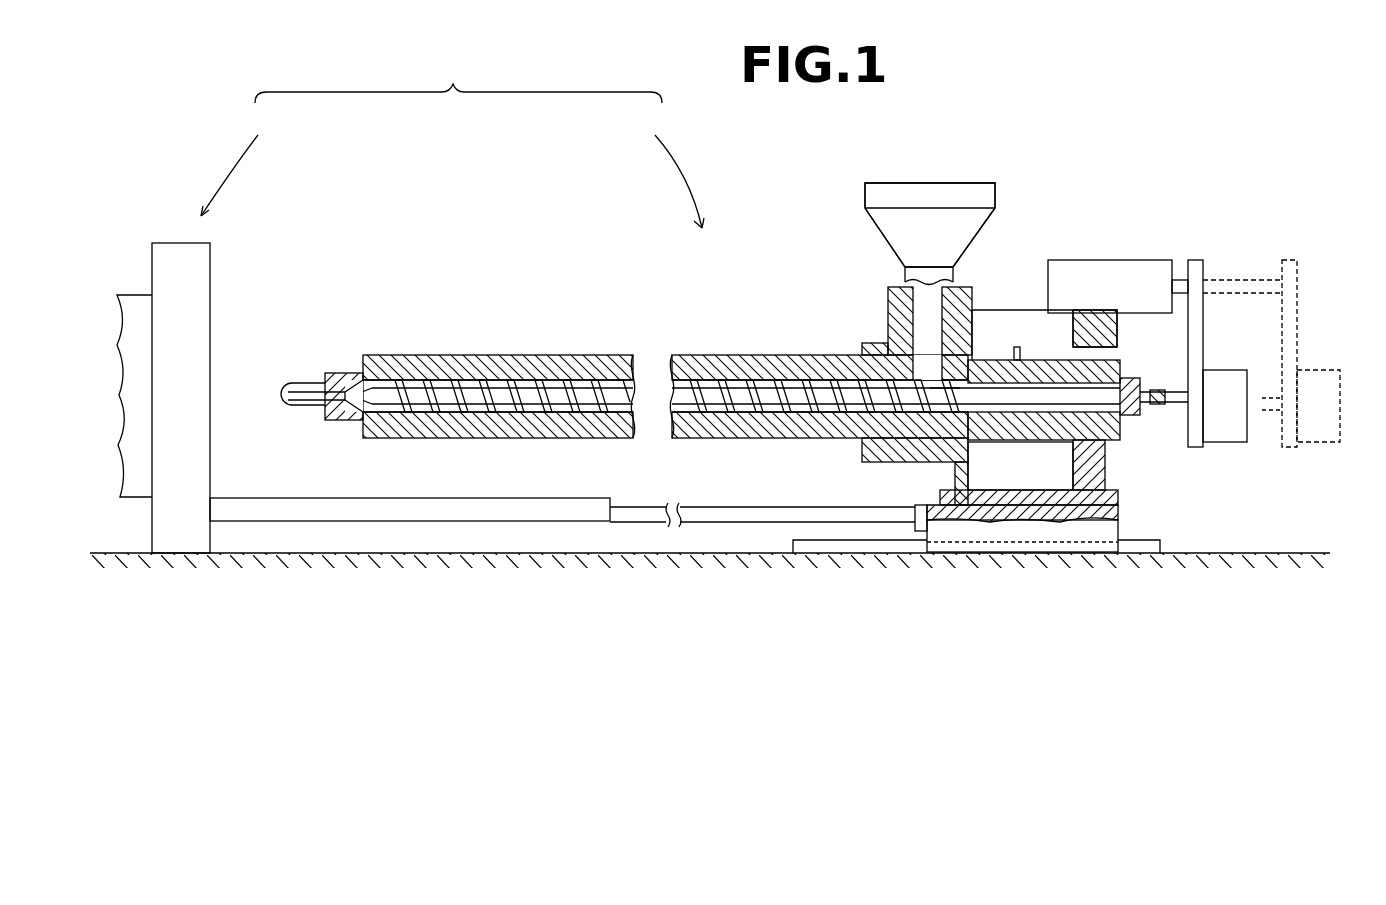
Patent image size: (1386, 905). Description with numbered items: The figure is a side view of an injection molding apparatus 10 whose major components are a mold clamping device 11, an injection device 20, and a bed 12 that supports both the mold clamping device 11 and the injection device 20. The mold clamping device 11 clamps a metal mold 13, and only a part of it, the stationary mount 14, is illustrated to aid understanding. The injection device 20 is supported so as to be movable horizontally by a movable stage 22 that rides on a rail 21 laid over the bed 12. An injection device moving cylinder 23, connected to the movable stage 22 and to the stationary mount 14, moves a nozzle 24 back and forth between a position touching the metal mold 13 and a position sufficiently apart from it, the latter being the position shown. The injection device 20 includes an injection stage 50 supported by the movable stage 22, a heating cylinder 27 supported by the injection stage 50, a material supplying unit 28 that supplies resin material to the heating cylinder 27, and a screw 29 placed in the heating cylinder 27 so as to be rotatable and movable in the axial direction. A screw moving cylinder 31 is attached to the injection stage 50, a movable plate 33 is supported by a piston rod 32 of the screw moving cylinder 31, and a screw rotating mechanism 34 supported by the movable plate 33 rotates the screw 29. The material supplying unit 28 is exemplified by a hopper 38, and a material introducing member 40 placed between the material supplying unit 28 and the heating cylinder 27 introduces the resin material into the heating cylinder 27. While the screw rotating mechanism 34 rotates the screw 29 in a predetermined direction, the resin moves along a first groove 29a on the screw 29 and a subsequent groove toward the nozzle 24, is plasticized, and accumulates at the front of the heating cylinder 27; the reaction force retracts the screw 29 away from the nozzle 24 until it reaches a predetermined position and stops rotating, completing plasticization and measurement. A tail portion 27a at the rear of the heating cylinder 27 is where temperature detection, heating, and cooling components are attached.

The injection molding apparatus 10 is at (458, 79).
The mold clamping device 11 is at (243, 162).
The bed 12 is at (683, 560).
The metal mold 13 is at (137, 304).
The stationary mount 14 is at (187, 312).
The injection device 20 is at (665, 169).
The rail 21 is at (893, 553).
The movable stage 22 is at (1030, 545).
The injection device moving cylinder 23 is at (485, 500).
The nozzle 24 is at (290, 405).
The heating cylinder 27 is at (560, 370).
The tail portion 27a is at (1016, 445).
The material supplying unit 28 is at (935, 197).
The hopper 38 is at (930, 225).
The screw 29 is at (453, 395).
The first groove 29a is at (930, 402).
The screw moving cylinder 31 is at (1108, 285).
The piston rod 32 is at (1178, 285).
The movable plate 33 is at (1196, 335).
The screw rotating mechanism 34 is at (1220, 445).
The material introducing member 40 is at (887, 318).
The injection stage 50 is at (1105, 488).